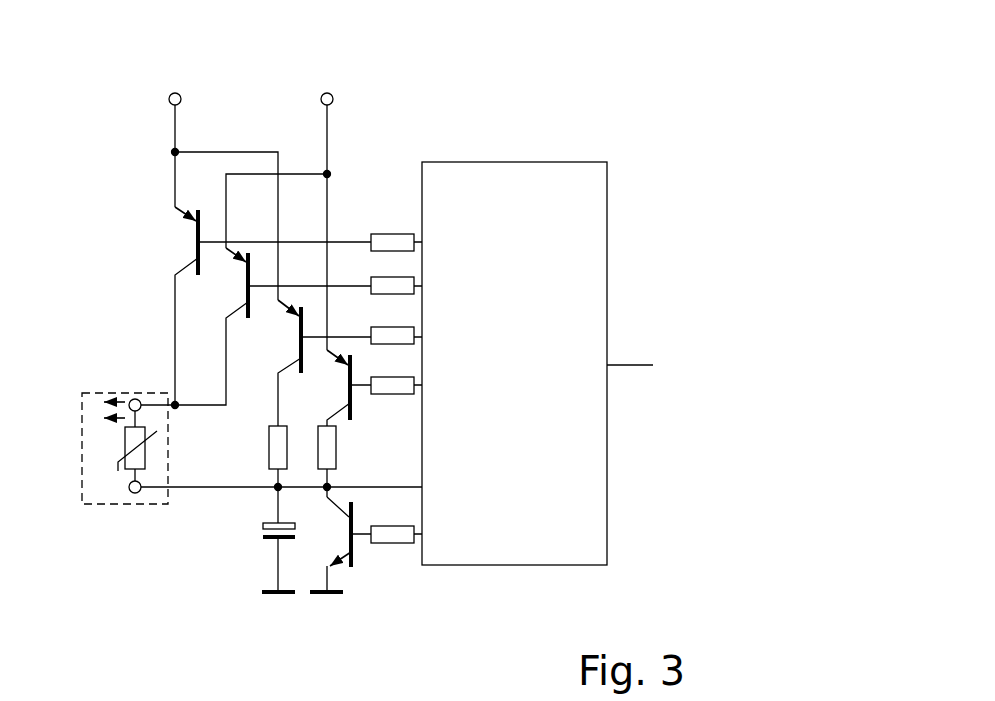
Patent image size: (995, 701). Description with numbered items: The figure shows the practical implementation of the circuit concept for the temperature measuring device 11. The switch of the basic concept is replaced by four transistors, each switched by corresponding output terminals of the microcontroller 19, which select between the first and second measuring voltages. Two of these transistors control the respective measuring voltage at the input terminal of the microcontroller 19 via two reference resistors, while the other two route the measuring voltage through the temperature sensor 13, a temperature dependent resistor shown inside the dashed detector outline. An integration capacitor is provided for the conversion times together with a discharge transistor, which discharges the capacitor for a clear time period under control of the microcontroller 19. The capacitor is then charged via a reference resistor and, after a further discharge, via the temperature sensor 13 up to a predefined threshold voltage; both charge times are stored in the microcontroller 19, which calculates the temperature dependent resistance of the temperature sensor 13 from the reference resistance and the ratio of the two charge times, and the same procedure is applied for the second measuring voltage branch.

The temperature measuring device 11 is at (469, 90).
The temperature sensor 13 is at (98, 441).
The microcontroller 19 is at (543, 162).